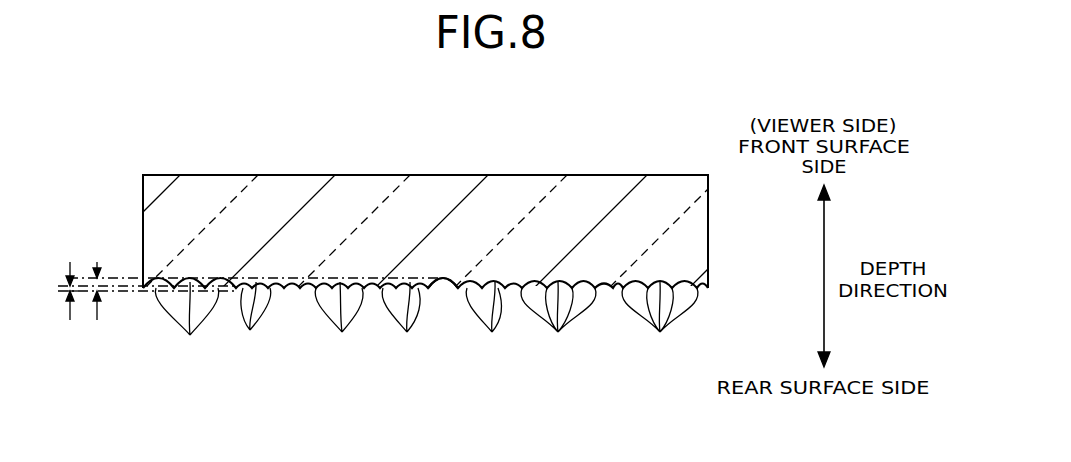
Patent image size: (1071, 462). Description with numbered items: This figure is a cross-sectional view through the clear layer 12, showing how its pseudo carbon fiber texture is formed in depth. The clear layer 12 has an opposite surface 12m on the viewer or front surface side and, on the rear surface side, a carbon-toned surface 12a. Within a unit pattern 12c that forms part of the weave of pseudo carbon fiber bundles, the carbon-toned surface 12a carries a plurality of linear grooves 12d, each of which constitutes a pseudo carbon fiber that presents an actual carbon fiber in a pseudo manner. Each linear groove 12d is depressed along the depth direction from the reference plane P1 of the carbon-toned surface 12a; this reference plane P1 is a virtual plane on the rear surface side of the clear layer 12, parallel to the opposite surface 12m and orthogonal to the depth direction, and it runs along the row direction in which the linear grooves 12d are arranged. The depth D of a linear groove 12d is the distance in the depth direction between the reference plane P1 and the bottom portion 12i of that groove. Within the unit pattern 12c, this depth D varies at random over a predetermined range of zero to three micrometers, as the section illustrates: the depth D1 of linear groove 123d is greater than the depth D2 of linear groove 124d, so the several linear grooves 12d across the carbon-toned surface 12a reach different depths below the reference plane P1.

The clear layer 12 is at (708, 228).
The opposite surface 12m is at (278, 175).
The unit pattern 12c is at (478, 143).
The carbon-toned surface 12a is at (156, 336).
The linear groove 12d is at (426, 354).
The linear groove 124d is at (297, 287).
The linear groove 123d is at (443, 280).
The bottom portion 12i is at (364, 354).
The depth D is at (235, 305).
The depth D1 is at (96, 274).
The depth D2 is at (66, 290).
The reference plane P1 is at (78, 294).